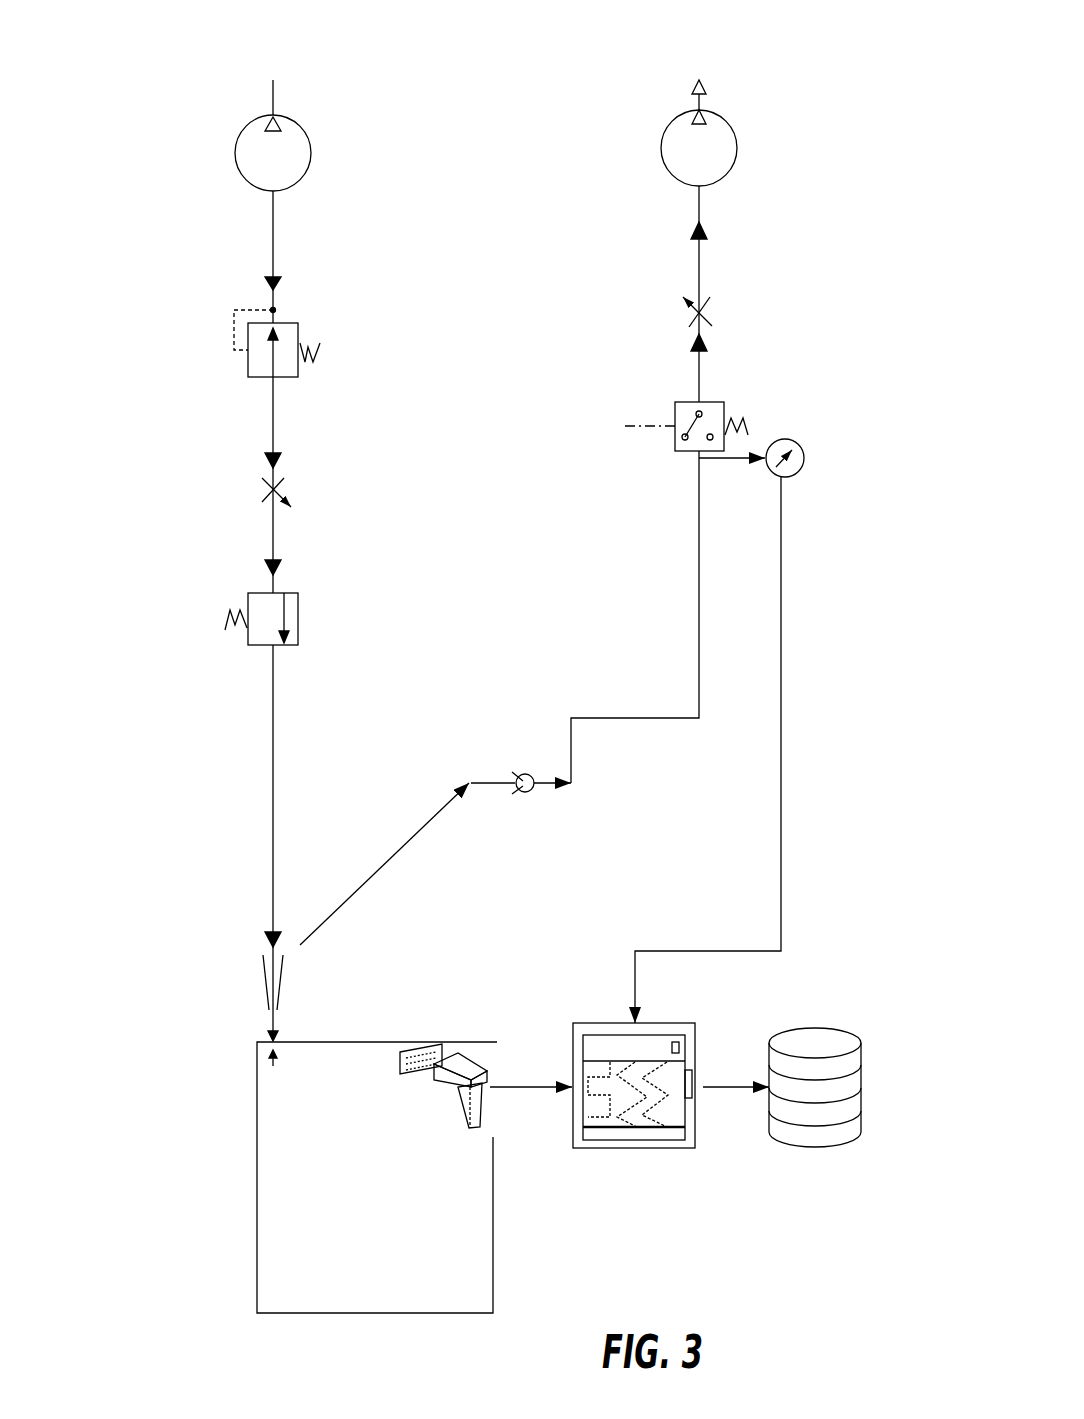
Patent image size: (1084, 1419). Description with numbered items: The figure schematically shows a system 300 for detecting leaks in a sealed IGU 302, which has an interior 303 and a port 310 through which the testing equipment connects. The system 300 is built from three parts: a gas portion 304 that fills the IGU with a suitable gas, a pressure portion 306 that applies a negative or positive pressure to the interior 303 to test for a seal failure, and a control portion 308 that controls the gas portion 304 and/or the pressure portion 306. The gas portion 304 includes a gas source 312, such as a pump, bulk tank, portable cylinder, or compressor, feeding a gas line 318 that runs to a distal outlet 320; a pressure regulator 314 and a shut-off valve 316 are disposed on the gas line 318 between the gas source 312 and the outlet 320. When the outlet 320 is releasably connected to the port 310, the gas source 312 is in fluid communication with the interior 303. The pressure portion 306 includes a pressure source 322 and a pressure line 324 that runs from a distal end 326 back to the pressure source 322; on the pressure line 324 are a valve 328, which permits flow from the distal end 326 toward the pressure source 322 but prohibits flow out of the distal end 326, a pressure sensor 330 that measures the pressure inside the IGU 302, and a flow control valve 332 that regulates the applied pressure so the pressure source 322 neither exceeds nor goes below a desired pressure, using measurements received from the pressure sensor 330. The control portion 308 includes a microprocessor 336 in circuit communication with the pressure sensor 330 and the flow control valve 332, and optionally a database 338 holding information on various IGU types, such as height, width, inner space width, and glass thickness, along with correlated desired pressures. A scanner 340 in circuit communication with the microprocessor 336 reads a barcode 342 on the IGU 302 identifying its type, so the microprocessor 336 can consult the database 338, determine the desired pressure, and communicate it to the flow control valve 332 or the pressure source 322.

The system 300 is at (172, 117).
The sealed IGU 302 is at (257, 1228).
The interior 303 is at (347, 1210).
The gas portion 304 is at (208, 492).
The pressure portion 306 is at (828, 446).
The control portion 308 is at (706, 1236).
The port 310 is at (276, 1060).
The gas source 312 is at (303, 128).
The pressure regulator 314 is at (295, 323).
The shut-off valve 316 is at (300, 595).
The gas line 318 is at (278, 716).
The outlet 320 is at (268, 1033).
The pressure source 322 is at (727, 115).
The pressure line 324 is at (700, 585).
The distal end 326 is at (280, 1033).
The valve 328 is at (527, 795).
The pressure sensor 330 is at (722, 402).
The flow control valve 332 is at (693, 312).
The microprocessor 336 is at (633, 1148).
The database 338 is at (815, 1150).
The scanner 340 is at (482, 1060).
The barcode 342 is at (437, 1047).